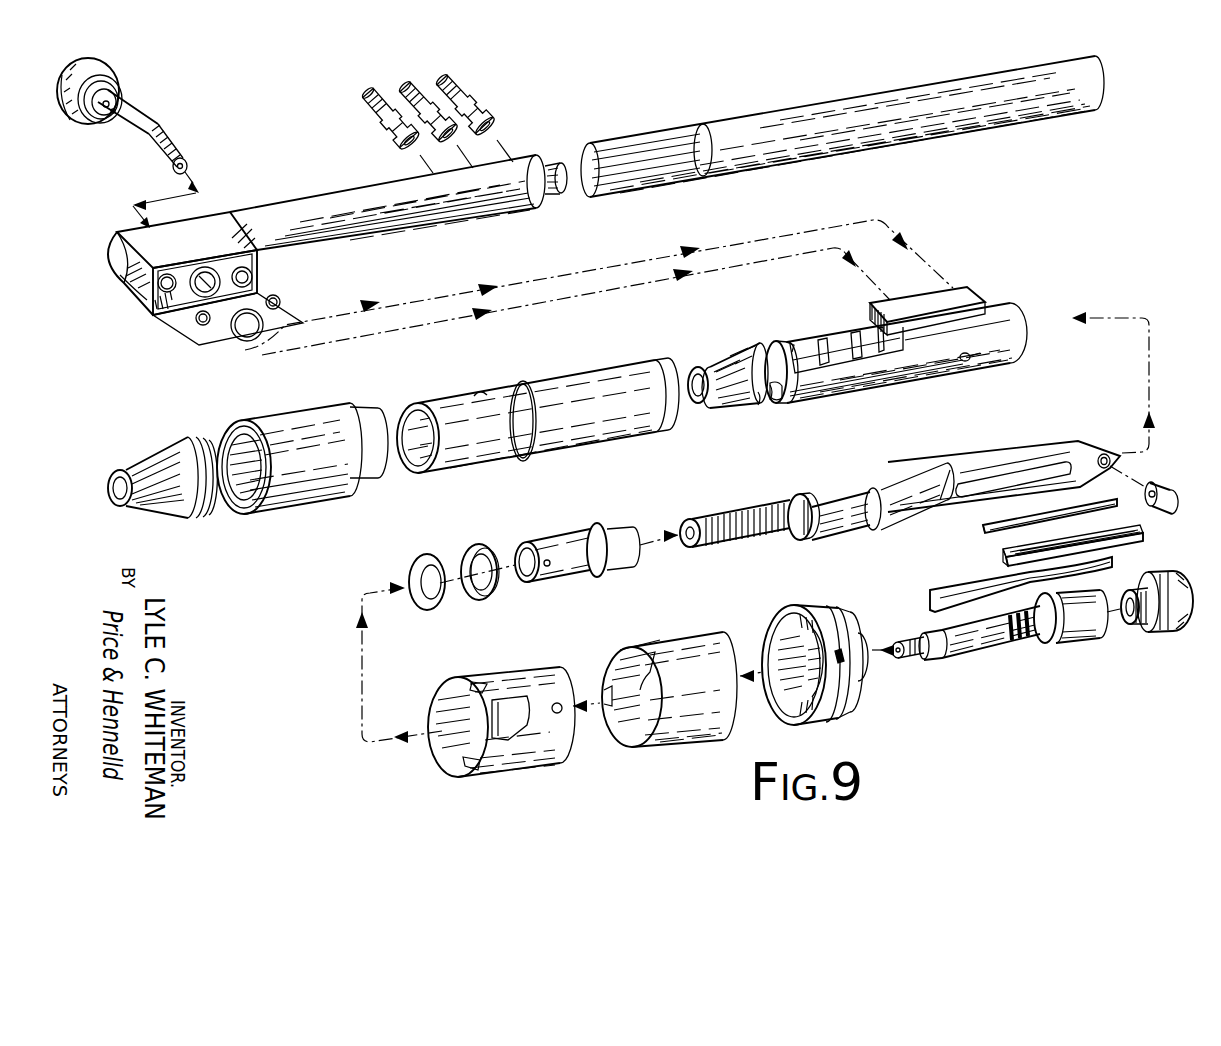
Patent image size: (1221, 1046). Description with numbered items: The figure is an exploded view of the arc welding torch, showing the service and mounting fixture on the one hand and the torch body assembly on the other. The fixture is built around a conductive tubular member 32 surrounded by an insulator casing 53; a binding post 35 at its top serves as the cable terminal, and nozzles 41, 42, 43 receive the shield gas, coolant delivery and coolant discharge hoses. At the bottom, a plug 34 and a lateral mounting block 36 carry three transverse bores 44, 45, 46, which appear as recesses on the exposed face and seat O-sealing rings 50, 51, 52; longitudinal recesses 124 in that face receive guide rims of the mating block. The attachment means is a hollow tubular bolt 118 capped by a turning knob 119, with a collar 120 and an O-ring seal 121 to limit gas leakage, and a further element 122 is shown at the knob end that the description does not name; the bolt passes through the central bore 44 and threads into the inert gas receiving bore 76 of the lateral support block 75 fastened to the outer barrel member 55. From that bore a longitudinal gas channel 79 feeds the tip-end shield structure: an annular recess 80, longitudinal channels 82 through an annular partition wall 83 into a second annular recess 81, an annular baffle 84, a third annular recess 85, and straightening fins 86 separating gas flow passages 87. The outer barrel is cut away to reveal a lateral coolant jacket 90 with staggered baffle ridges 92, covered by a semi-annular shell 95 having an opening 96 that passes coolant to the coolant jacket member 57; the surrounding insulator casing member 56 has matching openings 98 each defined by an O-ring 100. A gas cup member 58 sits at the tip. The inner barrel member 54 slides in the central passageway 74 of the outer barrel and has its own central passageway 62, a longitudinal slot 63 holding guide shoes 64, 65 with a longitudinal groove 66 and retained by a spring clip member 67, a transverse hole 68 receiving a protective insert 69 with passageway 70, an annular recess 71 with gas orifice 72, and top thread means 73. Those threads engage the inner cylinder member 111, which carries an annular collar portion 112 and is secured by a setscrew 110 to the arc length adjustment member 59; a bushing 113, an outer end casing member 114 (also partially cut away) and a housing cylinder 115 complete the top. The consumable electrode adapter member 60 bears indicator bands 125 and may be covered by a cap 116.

The tubular member 32 is at (305, 194).
The bottom plug 34 is at (108, 250).
The binding post 35 is at (563, 162).
The lateral mounting block 36 is at (130, 272).
The nozzle 41 is at (470, 108).
The nozzle 42 is at (417, 88).
The nozzle 43 is at (378, 90).
The central bore 44 is at (207, 279).
The bore 45 is at (251, 276).
The bore 46 is at (165, 288).
The O-sealing ring 50 is at (262, 326).
The O-sealing ring 51 is at (279, 299).
The O-sealing ring 52 is at (203, 325).
The insulator casing 53 is at (810, 114).
The inner barrel member 54 is at (1035, 454).
The outer barrel member 55 is at (1022, 308).
The insulator casing member 56 is at (547, 380).
The coolant jacket member 57 is at (290, 410).
The gas cup member 58 is at (157, 445).
The arc length adjustment member 59 is at (800, 604).
The consumable electrode adapter member 60 is at (965, 643).
The central passageway 62 is at (688, 545).
The longitudinal slot 63 is at (980, 482).
The guide shoe 64 is at (988, 524).
The guide shoe 65 is at (1005, 558).
The longitudinal groove 66 is at (1012, 533).
The spring clip member 67 is at (955, 602).
The transverse hole 68 is at (1104, 469).
The protective insert 69 is at (1176, 496).
The passageway 70 is at (1162, 486).
The annular recess 71 is at (858, 480).
The gas orifice 72 is at (820, 498).
The thread means 73 is at (724, 510).
The central passageway 74 is at (694, 374).
The lateral support block 75 is at (967, 295).
The inert gas receiving bore 76 is at (965, 362).
The gas channel 79 is at (943, 367).
The annular recess 80 is at (774, 340).
The annular recess 81 is at (766, 348).
The longitudinal channels 82 is at (778, 400).
The annular partition wall 83 is at (771, 403).
The annular baffle 84 is at (757, 406).
The annular recess 85 is at (742, 356).
The straightening fins 86 is at (737, 410).
The gas flow passages 87 is at (712, 362).
The lateral coolant jacket 90 is at (827, 336).
The baffle ridge 92 is at (873, 355).
The semi-annular shell 95 is at (900, 358).
The opening 96 is at (787, 340).
The opening 98 is at (480, 390).
The O-ring 100 is at (492, 391).
The setscrew 110 is at (844, 658).
The inner cylinder member 111 is at (563, 574).
The annular collar portion 112 is at (598, 576).
The bushing 113 is at (496, 720).
The outer end casing member 114 is at (493, 678).
The housing cylinder 115 is at (665, 643).
The cap 116 is at (1170, 631).
The tubular bolt member 118 is at (138, 126).
The turning knob 119 is at (112, 80).
The collar 120 is at (100, 60).
The O-ring seal 121 is at (114, 94).
The pin 122 is at (104, 115).
The longitudinal recesses 124 is at (185, 308).
The indicator bands 125 is at (1012, 634).